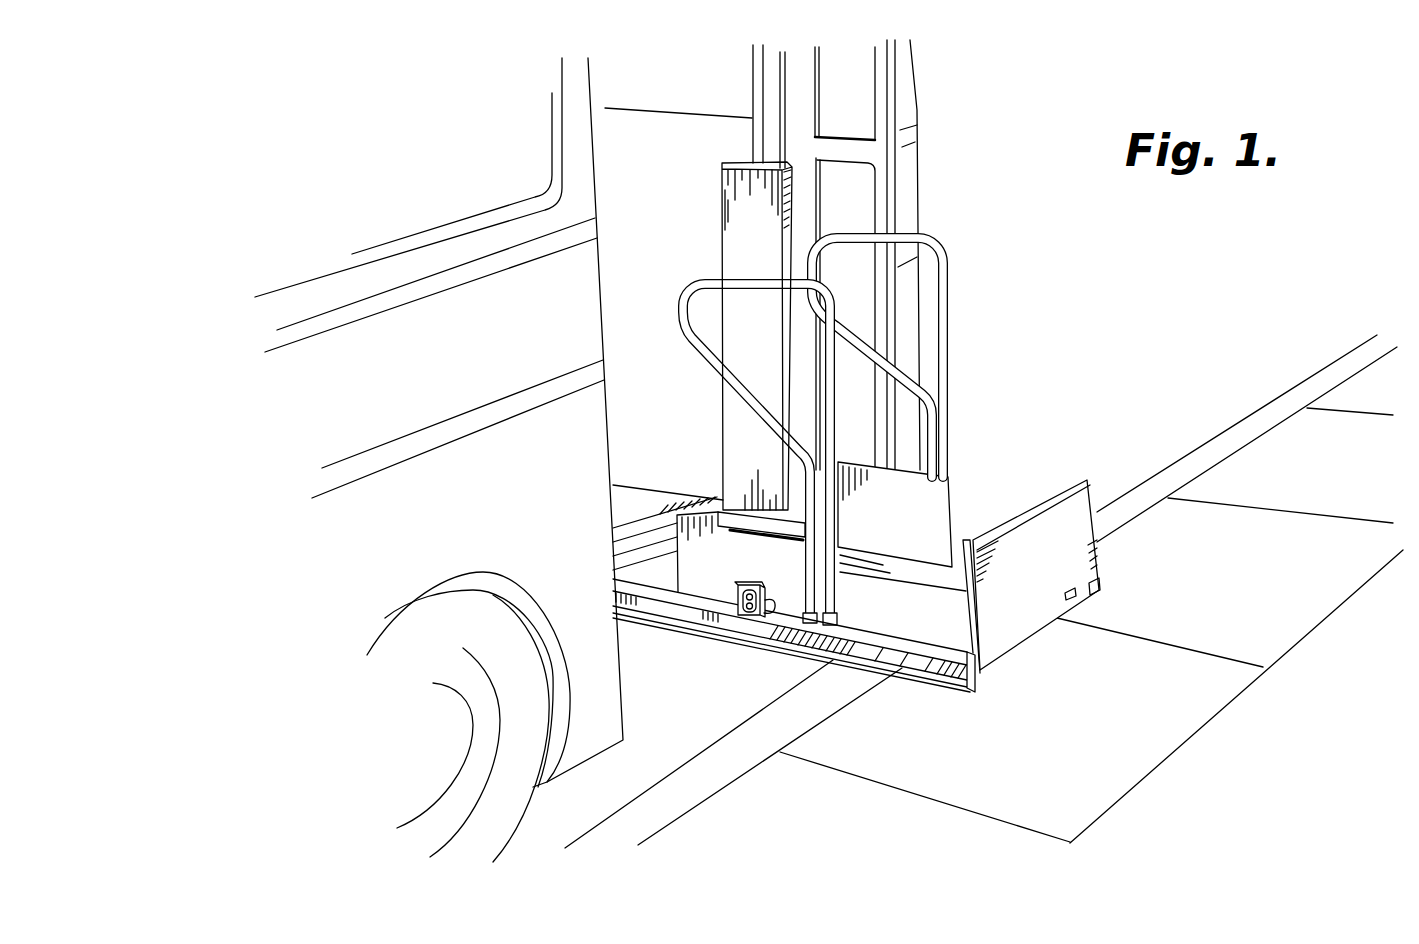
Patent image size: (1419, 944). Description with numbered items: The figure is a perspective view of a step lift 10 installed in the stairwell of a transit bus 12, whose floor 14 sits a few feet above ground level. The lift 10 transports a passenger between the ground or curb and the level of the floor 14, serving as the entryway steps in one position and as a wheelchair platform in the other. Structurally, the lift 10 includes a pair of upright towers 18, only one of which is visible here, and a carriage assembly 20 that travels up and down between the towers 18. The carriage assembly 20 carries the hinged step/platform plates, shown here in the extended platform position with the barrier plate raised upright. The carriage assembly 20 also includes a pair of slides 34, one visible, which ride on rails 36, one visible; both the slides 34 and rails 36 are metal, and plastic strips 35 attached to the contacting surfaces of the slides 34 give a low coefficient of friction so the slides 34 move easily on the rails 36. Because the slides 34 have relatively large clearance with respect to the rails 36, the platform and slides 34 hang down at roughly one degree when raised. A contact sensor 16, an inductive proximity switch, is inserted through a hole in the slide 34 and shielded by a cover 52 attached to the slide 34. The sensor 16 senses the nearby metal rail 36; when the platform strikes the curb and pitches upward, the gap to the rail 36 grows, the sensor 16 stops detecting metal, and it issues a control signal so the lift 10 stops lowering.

The lift 10 is at (966, 372).
The bus 12 is at (532, 506).
The floor 14 is at (628, 500).
The contact sensor 16 is at (742, 614).
The towers 18 is at (728, 239).
The carriage assembly 20 is at (974, 536).
The slides 34 is at (768, 651).
The plastic strips 35 is at (810, 650).
The rails 36 is at (690, 611).
The cover 52 is at (765, 624).